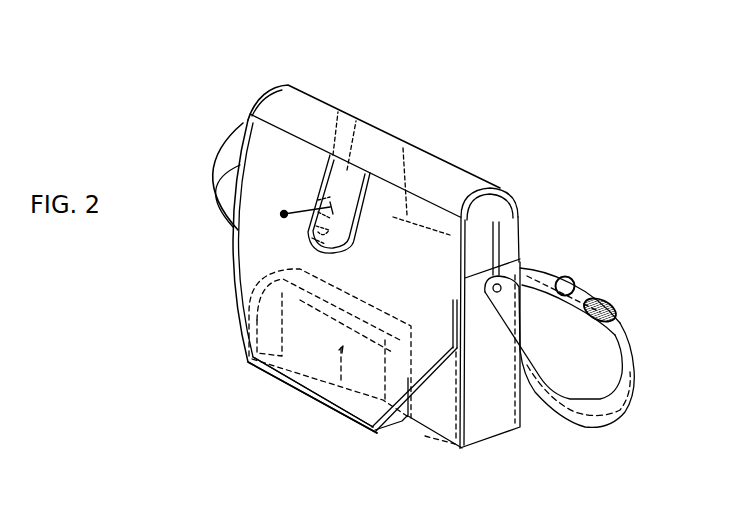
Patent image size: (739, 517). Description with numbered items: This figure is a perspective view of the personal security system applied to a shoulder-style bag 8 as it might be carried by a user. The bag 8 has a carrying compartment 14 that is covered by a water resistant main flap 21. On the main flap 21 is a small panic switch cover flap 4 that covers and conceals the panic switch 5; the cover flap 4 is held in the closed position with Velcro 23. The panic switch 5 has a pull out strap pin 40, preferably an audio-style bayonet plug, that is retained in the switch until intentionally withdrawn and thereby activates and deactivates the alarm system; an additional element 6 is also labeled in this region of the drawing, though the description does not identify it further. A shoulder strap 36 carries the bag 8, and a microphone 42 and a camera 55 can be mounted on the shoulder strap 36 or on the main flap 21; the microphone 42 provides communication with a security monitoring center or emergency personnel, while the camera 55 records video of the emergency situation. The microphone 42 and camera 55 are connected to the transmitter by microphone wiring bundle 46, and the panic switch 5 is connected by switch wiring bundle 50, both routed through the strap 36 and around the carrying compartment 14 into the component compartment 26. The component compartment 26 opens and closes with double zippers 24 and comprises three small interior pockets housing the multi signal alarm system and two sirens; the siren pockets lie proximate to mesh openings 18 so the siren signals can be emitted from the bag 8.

The panic switch cover flap 4 is at (370, 170).
The panic switch 5 is at (312, 197).
The tab 6 is at (308, 223).
The bag 8 is at (330, 107).
The carrying compartment 14 is at (478, 235).
The mesh openings 18 is at (250, 334).
The main flap 21 is at (457, 350).
The Velcro 23 is at (308, 240).
The double zippers 24 is at (414, 378).
The component compartment 26 is at (277, 382).
The shoulder strap 36 is at (540, 262).
The pull out strap pin 40 is at (284, 214).
The microphone 42 is at (614, 303).
The wiring bundle 46 is at (627, 378).
The switch wiring bundle 50 is at (363, 160).
The camera 55 is at (575, 280).